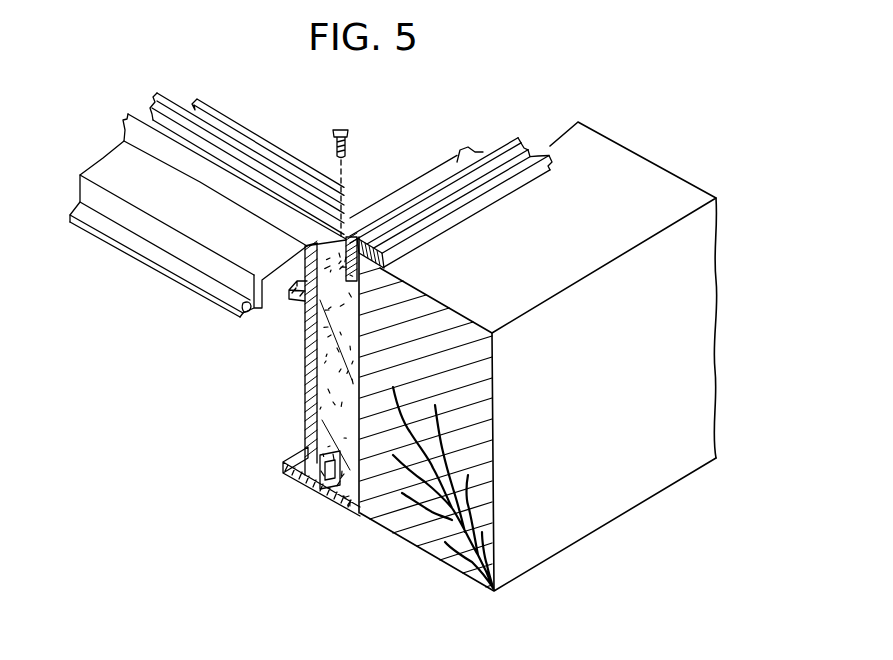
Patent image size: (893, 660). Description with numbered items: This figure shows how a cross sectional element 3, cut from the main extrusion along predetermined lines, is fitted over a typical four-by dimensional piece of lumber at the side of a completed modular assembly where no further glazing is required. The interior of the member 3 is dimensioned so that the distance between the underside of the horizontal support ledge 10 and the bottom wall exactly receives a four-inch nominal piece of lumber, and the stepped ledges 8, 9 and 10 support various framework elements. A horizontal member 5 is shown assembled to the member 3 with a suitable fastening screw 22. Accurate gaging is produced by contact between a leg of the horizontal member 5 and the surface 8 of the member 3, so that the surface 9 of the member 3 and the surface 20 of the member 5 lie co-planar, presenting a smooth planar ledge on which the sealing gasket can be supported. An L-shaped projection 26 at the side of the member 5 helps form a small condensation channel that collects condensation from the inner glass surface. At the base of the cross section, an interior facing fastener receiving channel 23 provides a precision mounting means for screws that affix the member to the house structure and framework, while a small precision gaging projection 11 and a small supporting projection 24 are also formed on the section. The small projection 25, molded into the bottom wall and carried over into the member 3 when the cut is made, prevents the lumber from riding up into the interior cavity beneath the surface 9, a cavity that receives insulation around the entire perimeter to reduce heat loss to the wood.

The cross sectional element 3 is at (307, 386).
The horizontal member 5 is at (102, 158).
The horizontal support ledge 8 is at (292, 293).
The horizontal support ledge 9 is at (457, 157).
The horizontal support ledge 10 is at (530, 150).
The small projection 11 is at (588, 133).
The surface 20 is at (158, 204).
The fastening screw 22 is at (350, 131).
The fastener receiving channel 23 is at (338, 494).
The small supporting projection 24 is at (525, 140).
The small projection 25 is at (340, 503).
The L-shaped projection 26 is at (248, 311).